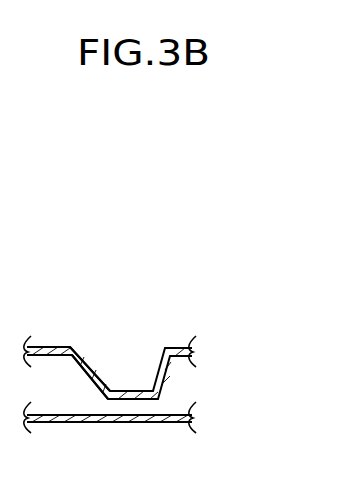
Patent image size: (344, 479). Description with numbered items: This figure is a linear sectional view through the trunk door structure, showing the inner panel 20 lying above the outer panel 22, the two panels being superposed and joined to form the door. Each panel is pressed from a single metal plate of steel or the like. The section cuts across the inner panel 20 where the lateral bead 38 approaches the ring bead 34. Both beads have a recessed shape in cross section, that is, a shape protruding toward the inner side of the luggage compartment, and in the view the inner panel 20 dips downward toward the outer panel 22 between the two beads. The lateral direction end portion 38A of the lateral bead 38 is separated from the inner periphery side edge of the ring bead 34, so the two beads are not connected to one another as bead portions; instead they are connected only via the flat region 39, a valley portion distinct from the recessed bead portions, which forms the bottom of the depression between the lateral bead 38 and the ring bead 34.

The inner panel 20 is at (200, 347).
The outer panel 22 is at (200, 415).
The lateral bead 38 is at (48, 347).
The lateral direction end portion 38A is at (112, 388).
The flat region 39 is at (132, 388).
The ring bead 34 is at (178, 347).